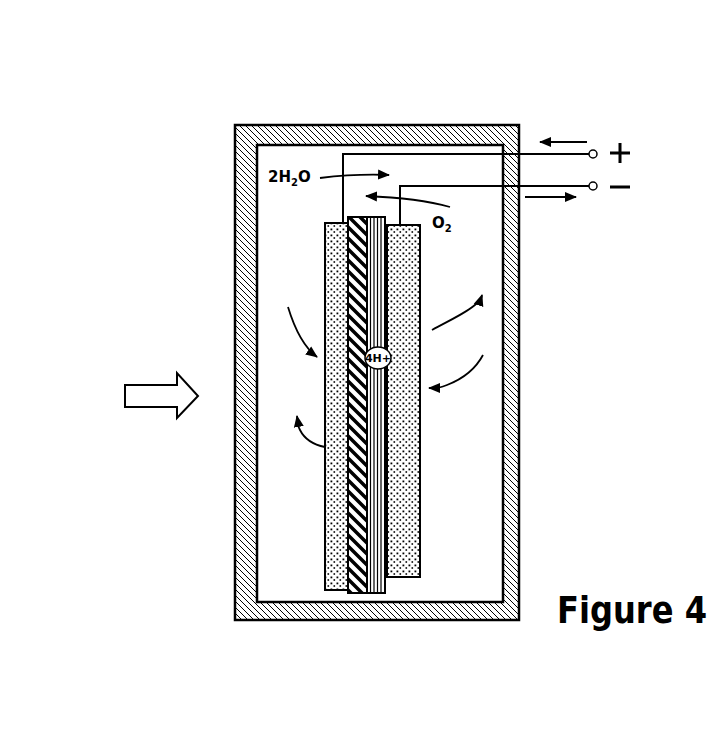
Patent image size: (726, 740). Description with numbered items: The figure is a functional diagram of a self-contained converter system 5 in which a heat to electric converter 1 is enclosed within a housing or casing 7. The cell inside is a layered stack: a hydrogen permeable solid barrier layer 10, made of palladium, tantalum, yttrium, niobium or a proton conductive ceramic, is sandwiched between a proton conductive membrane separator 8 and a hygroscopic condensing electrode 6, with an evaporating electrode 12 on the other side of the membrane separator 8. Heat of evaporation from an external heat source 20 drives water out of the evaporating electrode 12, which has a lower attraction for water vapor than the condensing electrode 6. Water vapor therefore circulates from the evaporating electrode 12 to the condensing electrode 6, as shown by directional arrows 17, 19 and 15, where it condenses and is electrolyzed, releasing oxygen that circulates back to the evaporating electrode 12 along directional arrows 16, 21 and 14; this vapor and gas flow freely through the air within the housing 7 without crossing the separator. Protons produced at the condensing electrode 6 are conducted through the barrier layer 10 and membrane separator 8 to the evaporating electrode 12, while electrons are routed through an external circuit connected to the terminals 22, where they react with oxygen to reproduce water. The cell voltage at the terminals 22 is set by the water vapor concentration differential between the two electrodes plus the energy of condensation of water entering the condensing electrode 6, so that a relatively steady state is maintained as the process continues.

The converter 1 is at (439, 586).
The self-contained converter system 5 is at (211, 108).
The condensing electrode 6 is at (422, 477).
The housing 7 is at (242, 180).
The membrane separator 8 is at (333, 590).
The hydrogen permeable solid barrier layer 10 is at (375, 593).
The evaporating electrode 12 is at (328, 478).
The directional arrow 14 is at (295, 333).
The directional arrow 15 is at (470, 373).
The directional arrow 16 is at (478, 307).
The directional arrow 17 is at (305, 437).
The directional arrow 19 is at (372, 183).
The external heat source 20 is at (118, 341).
The directional arrow 21 is at (450, 207).
The terminals 22 is at (624, 210).